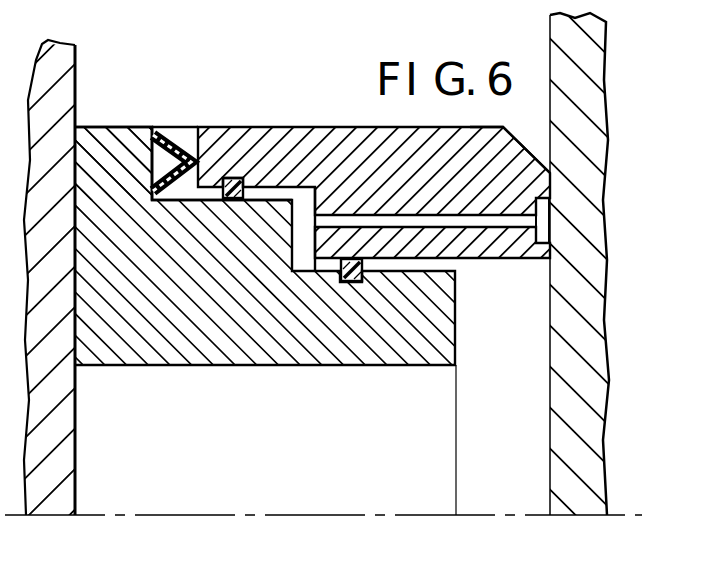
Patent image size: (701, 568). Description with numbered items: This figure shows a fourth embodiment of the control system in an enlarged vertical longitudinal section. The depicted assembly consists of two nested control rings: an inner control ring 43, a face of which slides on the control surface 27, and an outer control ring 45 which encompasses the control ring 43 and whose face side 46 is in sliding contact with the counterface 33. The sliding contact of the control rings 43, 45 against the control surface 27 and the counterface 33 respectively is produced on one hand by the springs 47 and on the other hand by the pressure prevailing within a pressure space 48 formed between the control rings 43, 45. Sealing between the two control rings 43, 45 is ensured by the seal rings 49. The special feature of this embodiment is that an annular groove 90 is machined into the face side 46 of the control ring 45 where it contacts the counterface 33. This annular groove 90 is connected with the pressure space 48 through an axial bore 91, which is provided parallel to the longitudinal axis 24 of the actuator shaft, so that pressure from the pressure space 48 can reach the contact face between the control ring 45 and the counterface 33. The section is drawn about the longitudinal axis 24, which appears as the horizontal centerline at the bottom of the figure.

The longitudinal axis 24 is at (207, 515).
The control surface 27 is at (75, 490).
The counterface 33 is at (548, 440).
The control ring 43 is at (102, 150).
The control ring 45 is at (332, 147).
The face side 46 is at (550, 193).
The springs 47 is at (178, 160).
The pressure space 48 is at (310, 258).
The seal rings 49 is at (237, 178).
The annular groove 90 is at (548, 232).
The axial bore 91 is at (362, 157).